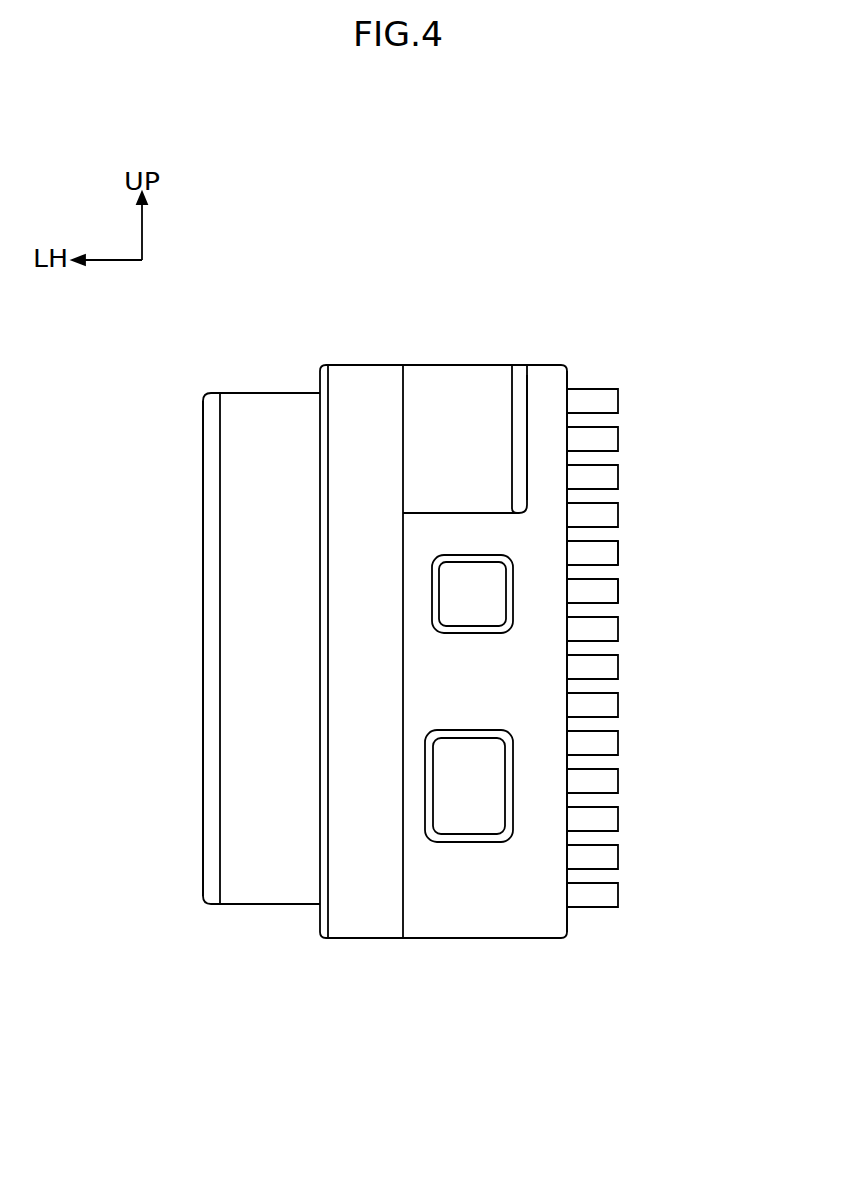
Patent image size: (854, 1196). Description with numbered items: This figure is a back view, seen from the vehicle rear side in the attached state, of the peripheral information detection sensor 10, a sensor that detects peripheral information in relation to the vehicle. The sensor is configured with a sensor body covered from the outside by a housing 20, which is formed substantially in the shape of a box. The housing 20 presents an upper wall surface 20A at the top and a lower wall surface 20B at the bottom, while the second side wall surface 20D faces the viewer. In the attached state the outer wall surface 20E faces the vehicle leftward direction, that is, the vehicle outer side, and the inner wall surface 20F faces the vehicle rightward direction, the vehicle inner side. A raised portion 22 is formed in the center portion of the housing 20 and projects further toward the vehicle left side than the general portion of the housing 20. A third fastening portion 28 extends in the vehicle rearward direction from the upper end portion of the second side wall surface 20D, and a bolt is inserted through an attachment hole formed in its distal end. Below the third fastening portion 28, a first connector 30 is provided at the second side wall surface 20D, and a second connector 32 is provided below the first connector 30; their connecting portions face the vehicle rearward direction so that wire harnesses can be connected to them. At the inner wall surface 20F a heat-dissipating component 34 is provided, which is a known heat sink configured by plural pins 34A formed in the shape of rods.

The peripheral information detection sensor 10 is at (227, 358).
The housing 20 is at (362, 366).
The upper wall surface 20A is at (488, 365).
The lower wall surface 20B is at (452, 940).
The second side wall surface 20D is at (292, 415).
The outer wall surface 20E is at (203, 680).
The inner wall surface 20F is at (567, 758).
The raised portion 22 is at (203, 835).
The third fastening portion 28 is at (528, 384).
The first connector 30 is at (513, 600).
The second connector 32 is at (470, 842).
The heat-dissipating component 34 is at (619, 477).
The pins 34A is at (618, 593).